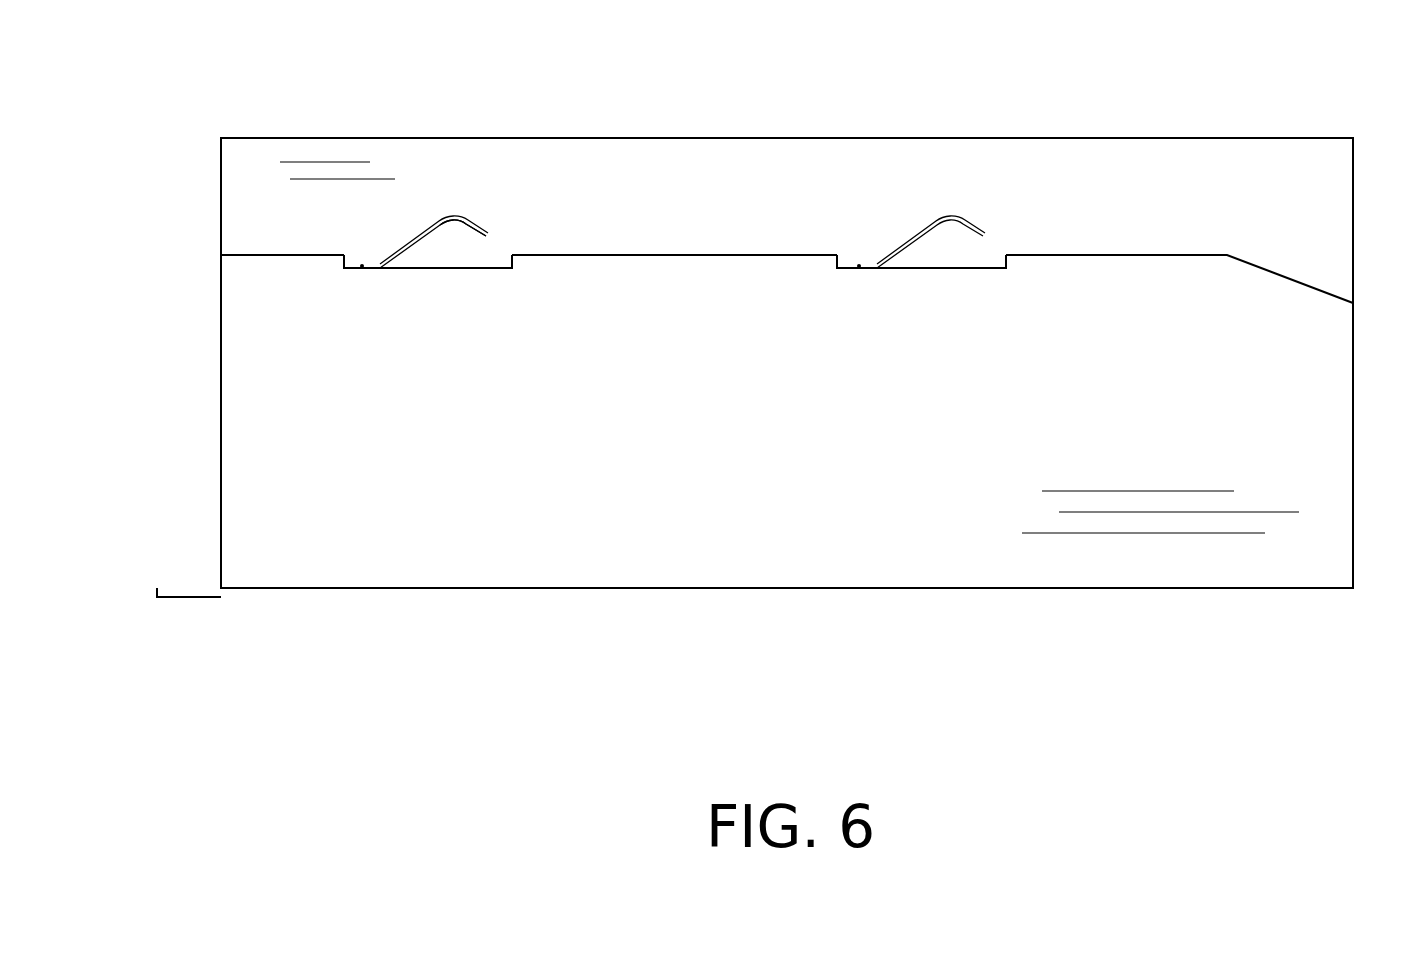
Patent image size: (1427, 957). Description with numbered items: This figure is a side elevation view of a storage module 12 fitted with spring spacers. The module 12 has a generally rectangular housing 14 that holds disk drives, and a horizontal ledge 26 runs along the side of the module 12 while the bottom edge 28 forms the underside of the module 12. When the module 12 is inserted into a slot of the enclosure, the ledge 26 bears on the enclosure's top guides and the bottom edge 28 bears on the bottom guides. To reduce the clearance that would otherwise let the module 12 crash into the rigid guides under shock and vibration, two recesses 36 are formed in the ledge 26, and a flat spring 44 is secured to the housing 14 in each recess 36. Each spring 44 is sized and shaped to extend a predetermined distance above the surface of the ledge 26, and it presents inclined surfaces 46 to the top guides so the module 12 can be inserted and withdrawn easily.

The module 12 is at (1193, 110).
The housing 14 is at (1332, 439).
The horizontal ledge 26 is at (662, 255).
The bottom edge 28 is at (902, 573).
The recess 36 is at (490, 270).
The spring 44 is at (412, 253).
The inclined surface 46 is at (472, 226).